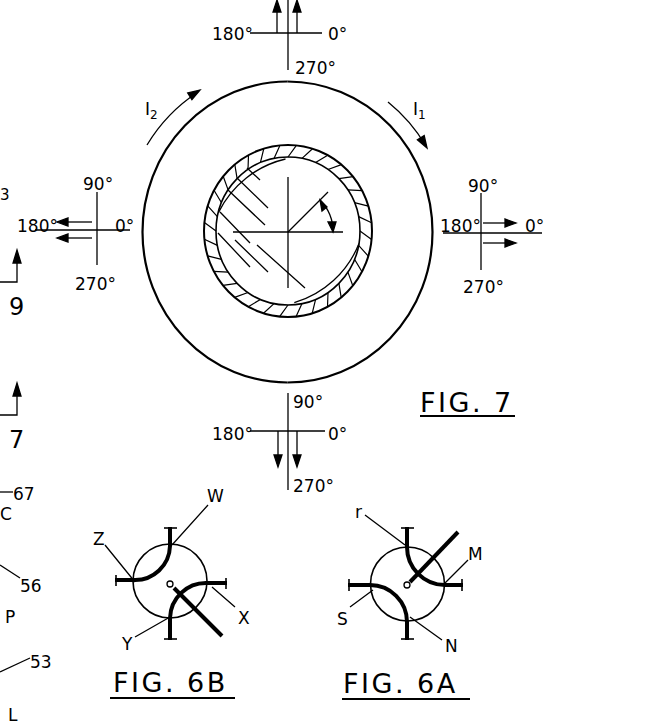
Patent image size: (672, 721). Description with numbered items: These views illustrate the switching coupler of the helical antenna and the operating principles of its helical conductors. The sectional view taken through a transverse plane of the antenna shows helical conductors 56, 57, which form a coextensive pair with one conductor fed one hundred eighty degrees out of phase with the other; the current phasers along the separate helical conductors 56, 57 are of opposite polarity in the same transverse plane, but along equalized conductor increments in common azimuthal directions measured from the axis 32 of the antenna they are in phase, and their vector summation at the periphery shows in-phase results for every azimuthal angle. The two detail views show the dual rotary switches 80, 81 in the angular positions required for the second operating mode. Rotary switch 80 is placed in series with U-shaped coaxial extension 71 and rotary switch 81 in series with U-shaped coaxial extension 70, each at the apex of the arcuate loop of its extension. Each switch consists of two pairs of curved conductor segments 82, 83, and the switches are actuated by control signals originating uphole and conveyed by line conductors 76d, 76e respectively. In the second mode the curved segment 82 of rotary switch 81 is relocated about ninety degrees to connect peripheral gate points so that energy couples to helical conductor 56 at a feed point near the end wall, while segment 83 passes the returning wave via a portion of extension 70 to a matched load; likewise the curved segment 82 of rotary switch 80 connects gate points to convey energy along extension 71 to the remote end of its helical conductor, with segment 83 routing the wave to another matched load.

In FIG. 7, the axis 32 is at (293, 234).
In FIG. 7, the helical conductor 56 is at (175, 328).
In FIG. 7, the helical conductor 57 is at (412, 312).
In FIG. 6A, the U-shaped coaxial extension 70 is at (452, 588).
In FIG. 6B, the U-shaped coaxial extension 71 is at (222, 577).
In FIG. 6B, the line conductor 76d is at (222, 636).
In FIG. 6A, the line conductor 76e is at (462, 533).
In FIG. 6B, the rotary switch 80 is at (137, 603).
In FIG. 6A, the rotary switch 81 is at (375, 562).
In FIG. 6B, the curved conductor segment 82 is at (174, 591).
In FIG. 6A, the curved conductor segment 82 is at (412, 577).
In FIG. 6B, the curved conductor segment 83 is at (158, 563).
In FIG. 6A, the curved conductor segment 83 is at (402, 605).